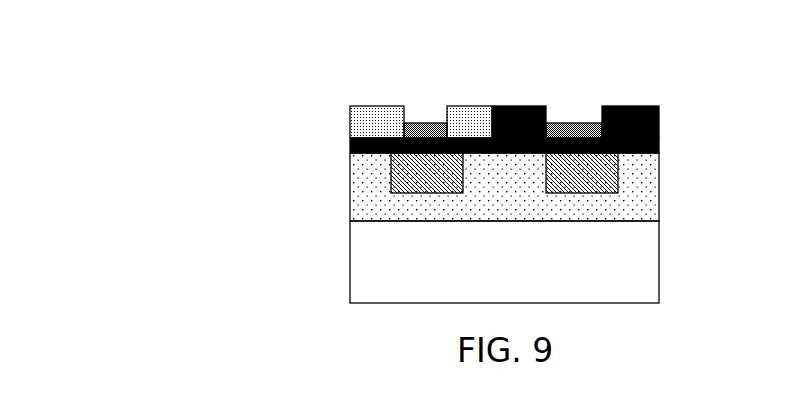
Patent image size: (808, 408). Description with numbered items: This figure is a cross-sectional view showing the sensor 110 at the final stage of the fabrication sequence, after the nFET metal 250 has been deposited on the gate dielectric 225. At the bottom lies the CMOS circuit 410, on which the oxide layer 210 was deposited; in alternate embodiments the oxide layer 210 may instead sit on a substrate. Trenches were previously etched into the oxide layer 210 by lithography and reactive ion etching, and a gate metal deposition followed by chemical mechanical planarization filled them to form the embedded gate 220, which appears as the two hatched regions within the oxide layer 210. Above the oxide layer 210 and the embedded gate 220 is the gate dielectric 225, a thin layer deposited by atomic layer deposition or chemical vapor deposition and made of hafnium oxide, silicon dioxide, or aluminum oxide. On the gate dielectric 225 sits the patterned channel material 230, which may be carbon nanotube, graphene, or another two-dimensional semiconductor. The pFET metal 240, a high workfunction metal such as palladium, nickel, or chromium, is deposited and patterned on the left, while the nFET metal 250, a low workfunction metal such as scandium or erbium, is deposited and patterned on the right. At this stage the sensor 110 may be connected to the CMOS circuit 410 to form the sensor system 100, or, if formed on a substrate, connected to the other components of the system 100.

The sensor system 100 is at (131, 145).
The sensor 110 is at (292, 145).
The oxide layer 210 is at (350, 197).
The embedded gate 220 is at (625, 179).
The gate dielectric 225 is at (660, 145).
The channel material 230 is at (565, 93).
The pFET metal 240 is at (364, 86).
The nFET metal 250 is at (669, 94).
The CMOS circuit 410 is at (523, 278).